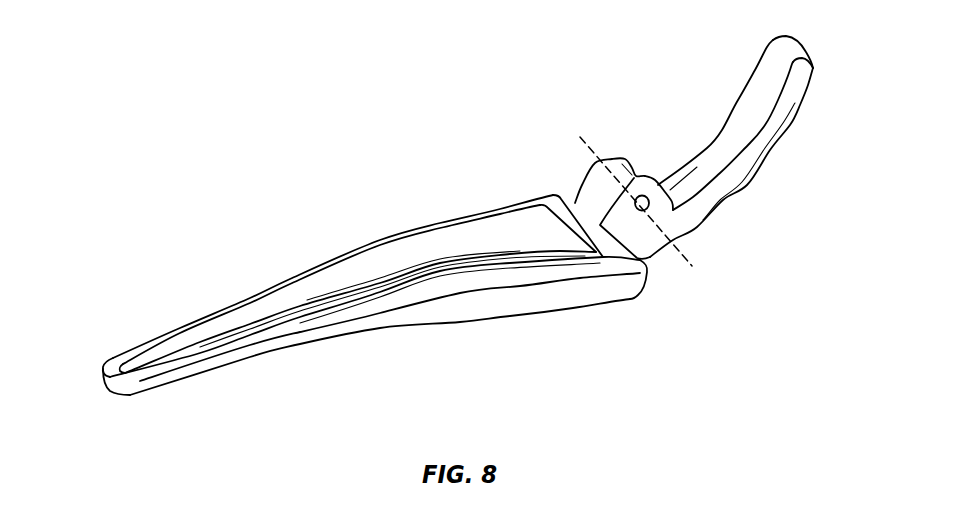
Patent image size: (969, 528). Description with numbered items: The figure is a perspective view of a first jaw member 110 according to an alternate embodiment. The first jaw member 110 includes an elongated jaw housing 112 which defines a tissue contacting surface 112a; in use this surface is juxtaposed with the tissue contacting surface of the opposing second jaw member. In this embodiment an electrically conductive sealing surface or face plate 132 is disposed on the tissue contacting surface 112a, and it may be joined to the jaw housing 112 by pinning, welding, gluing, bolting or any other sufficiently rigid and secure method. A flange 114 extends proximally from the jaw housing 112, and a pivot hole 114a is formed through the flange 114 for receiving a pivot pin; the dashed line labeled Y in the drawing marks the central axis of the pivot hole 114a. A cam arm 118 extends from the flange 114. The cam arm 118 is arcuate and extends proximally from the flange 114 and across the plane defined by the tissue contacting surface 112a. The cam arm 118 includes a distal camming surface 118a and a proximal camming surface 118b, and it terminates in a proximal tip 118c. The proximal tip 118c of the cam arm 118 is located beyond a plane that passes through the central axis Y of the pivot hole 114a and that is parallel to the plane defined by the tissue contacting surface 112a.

The first jaw member 110 is at (287, 226).
The jaw housing 112 is at (503, 317).
The tissue contacting surface 112a is at (112, 372).
The electrically conductive sealing surface 132 is at (263, 307).
The flange 114 is at (627, 172).
The pivot hole 114a is at (647, 205).
The cam arm 118 is at (770, 143).
The distal camming surface 118a is at (765, 80).
The proximal camming surface 118b is at (800, 113).
The proximal tip 118c is at (799, 50).